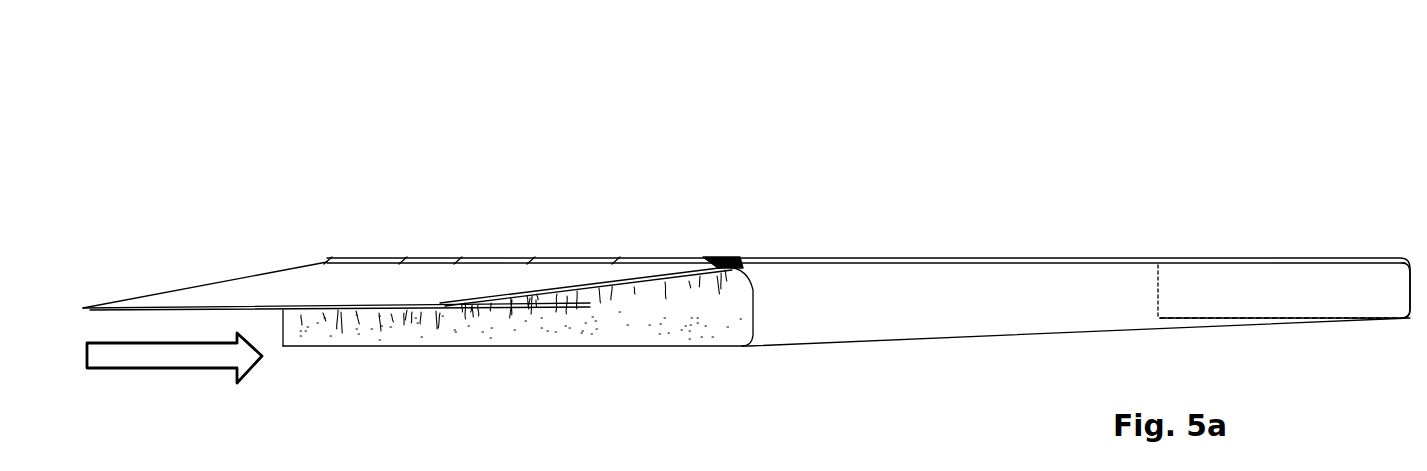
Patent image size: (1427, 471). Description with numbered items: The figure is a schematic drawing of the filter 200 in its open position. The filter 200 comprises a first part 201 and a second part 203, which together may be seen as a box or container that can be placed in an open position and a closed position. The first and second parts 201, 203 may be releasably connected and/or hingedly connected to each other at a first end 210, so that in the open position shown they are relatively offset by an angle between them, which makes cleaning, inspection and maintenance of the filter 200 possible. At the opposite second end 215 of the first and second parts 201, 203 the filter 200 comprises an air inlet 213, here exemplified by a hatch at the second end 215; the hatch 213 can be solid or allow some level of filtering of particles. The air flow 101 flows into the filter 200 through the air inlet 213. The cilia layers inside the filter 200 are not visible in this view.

The filter 200 is at (353, 140).
The air flow 101 is at (174, 358).
The air inlet 213 is at (277, 280).
The second part 203 is at (968, 208).
The first part 201 is at (938, 340).
The second end 215 is at (678, 346).
The first end 210 is at (1355, 295).